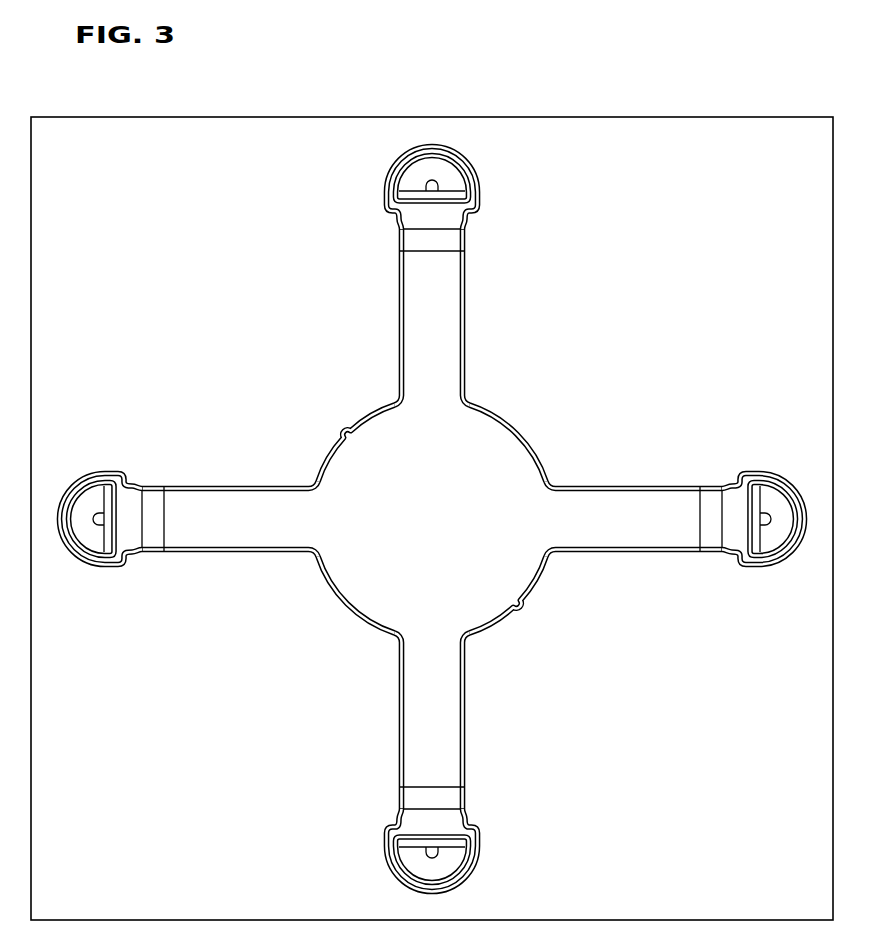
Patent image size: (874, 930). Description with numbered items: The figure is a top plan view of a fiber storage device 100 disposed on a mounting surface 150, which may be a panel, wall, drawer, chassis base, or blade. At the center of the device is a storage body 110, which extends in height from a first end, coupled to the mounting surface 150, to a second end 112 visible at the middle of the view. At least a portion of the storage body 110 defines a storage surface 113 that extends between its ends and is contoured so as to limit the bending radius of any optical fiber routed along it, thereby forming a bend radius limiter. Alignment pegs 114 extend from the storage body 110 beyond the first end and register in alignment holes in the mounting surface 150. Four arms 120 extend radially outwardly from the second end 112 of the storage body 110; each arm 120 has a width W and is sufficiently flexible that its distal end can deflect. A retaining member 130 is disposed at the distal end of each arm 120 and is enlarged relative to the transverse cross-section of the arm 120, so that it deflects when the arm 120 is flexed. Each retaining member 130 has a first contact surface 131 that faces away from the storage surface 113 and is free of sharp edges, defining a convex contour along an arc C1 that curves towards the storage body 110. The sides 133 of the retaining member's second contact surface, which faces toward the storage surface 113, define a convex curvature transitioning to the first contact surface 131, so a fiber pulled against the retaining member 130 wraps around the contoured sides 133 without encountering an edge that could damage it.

The fiber storage device 100 is at (377, 363).
The storage body 110 is at (353, 618).
The second end 112 is at (452, 533).
The storage surface 113 is at (513, 427).
The alignment pegs 114 is at (340, 430).
The arm 120 is at (467, 275).
The retaining member 130 is at (475, 165).
The first contact surface 131 is at (57, 532).
The sides 133 is at (125, 473).
The mounting surface 150 is at (100, 160).
The width W is at (196, 602).
The arc C1 is at (380, 878).